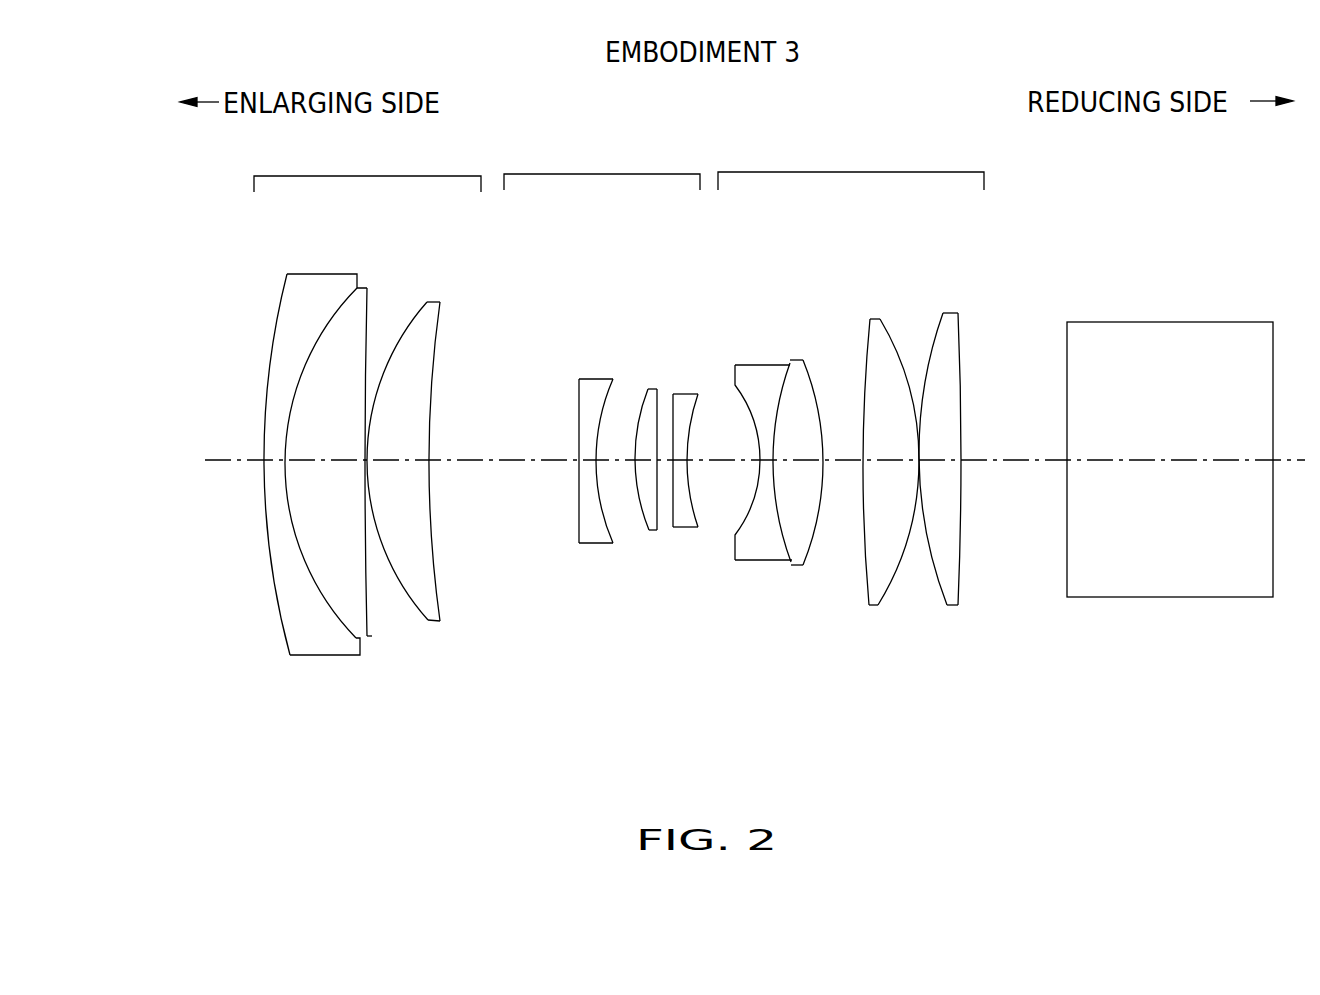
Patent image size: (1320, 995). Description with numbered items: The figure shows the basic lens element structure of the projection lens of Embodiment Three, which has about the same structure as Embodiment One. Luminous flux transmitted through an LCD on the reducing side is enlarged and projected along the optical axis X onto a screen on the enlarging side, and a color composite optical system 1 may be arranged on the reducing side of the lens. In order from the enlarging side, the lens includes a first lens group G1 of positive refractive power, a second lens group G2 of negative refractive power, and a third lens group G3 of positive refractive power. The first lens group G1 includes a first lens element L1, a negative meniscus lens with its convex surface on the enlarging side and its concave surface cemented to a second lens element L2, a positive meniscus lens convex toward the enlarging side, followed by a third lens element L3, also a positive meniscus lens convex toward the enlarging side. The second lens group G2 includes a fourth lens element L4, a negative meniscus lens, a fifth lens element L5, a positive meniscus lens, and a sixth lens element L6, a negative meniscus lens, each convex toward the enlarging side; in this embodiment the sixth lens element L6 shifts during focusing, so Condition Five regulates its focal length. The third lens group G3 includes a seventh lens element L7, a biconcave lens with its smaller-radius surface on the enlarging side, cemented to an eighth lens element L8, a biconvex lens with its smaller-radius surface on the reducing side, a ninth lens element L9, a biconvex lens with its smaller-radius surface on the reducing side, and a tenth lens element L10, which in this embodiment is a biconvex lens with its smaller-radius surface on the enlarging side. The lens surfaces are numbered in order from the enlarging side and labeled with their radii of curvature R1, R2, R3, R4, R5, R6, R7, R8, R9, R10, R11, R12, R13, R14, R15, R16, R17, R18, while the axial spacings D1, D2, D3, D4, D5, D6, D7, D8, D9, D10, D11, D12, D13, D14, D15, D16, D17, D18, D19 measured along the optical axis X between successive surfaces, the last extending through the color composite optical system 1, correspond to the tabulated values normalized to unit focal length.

The optical axis X is at (203, 472).
The color composite optical system 1 is at (1172, 592).
The first lens group G1 is at (367, 398).
The second lens group G2 is at (602, 345).
The third lens group G3 is at (851, 374).
The first lens element L1 is at (306, 472).
The second lens element L2 is at (402, 465).
The third lens element L3 is at (458, 464).
The fourth lens element L4 is at (577, 461).
The fifth lens element L5 is at (643, 448).
The sixth lens element L6 is at (697, 428).
The seventh lens element L7 is at (757, 448).
The eighth lens element L8 is at (817, 464).
The ninth lens element L9 is at (887, 442).
The tenth lens element L10 is at (970, 444).
The radius of curvature of first surface R1 is at (281, 293).
The radius of curvature of second surface R2 is at (340, 300).
The radius of curvature of third surface R3 is at (370, 296).
The radius of curvature of fourth surface R4 is at (410, 303).
The radius of curvature of fifth surface R5 is at (442, 310).
The radius of curvature of sixth surface R6 is at (578, 385).
The radius of curvature of seventh surface R7 is at (613, 385).
The radius of curvature of eighth surface R8 is at (640, 400).
The radius of curvature of ninth surface R9 is at (657, 392).
The radius of curvature of tenth surface R10 is at (672, 397).
The radius of curvature of eleventh surface R11 is at (697, 398).
The radius of curvature of twelfth surface R12 is at (736, 375).
The radius of curvature of thirteenth surface R13 is at (778, 365).
The radius of curvature of fourteenth surface R14 is at (810, 362).
The radius of curvature of fifteenth surface R15 is at (868, 323).
The radius of curvature of sixteenth surface R16 is at (885, 325).
The radius of curvature of seventeenth surface R17 is at (941, 316).
The radius of curvature of eighteenth surface R18 is at (963, 330).
The axial spacing following first surface D1 is at (262, 441).
The axial spacing following second surface D2 is at (312, 443).
The axial spacing following third surface D3 is at (380, 443).
The axial spacing following fourth surface D4 is at (387, 463).
The axial spacing following fifth surface D5 is at (463, 447).
The axial spacing following sixth surface D6 is at (582, 456).
The axial spacing following seventh surface D7 is at (590, 480).
The axial spacing following eighth surface D8 is at (630, 455).
The axial spacing following ninth surface D9 is at (648, 478).
The axial spacing following tenth surface D10 is at (667, 480).
The axial spacing following eleventh surface D11 is at (685, 462).
The axial spacing following twelfth surface D12 is at (752, 458).
The axial spacing following thirteenth surface D13 is at (800, 465).
The axial spacing following fourteenth surface D14 is at (845, 458).
The axial spacing following fifteenth surface D15 is at (895, 463).
The axial spacing following sixteenth surface D16 is at (925, 458).
The axial spacing following seventeenth surface D17 is at (965, 468).
The axial spacing following eighteenth surface D18 is at (1020, 457).
The axial spacing following nineteenth surface D19 is at (1167, 457).